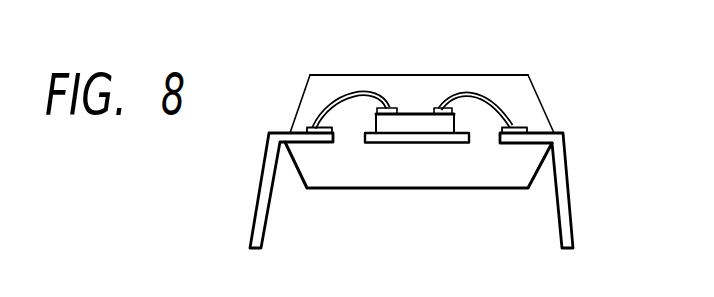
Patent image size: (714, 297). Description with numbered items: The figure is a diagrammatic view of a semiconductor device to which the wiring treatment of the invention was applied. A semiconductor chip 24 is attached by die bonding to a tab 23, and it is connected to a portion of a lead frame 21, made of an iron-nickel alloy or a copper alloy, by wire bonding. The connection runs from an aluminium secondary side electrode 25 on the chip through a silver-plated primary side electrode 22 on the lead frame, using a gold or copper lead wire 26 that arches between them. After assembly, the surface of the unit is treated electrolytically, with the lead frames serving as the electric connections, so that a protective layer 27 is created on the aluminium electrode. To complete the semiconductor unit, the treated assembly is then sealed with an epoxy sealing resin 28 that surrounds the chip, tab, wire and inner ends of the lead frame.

The lead frame 21 is at (258, 199).
The primary side electrode 22 is at (308, 124).
The tab 23 is at (422, 144).
The semiconductor chip 24 is at (421, 118).
The secondary side electrode 25 is at (406, 112).
The lead wire 26 is at (349, 91).
The protective layer 27 is at (392, 106).
The epoxy sealing resin 28 is at (347, 182).